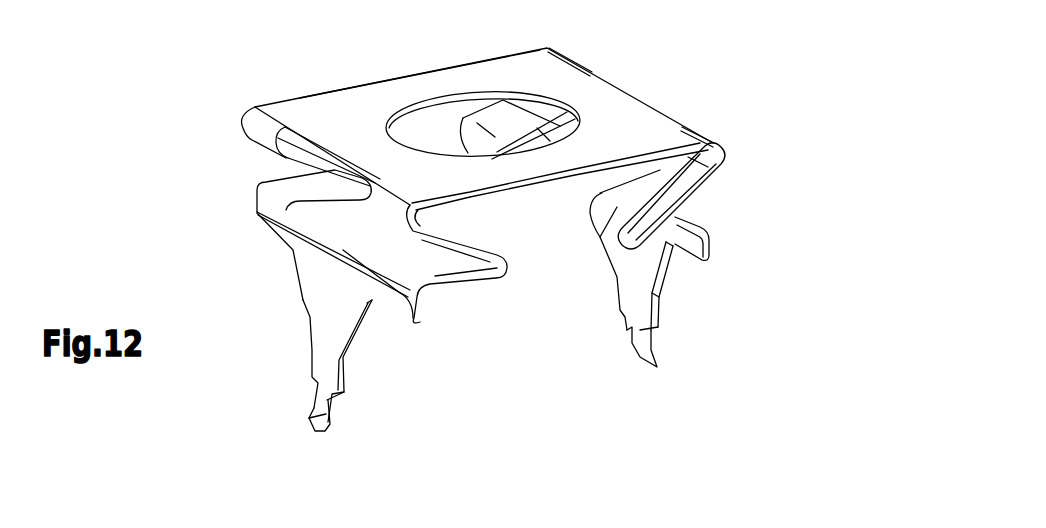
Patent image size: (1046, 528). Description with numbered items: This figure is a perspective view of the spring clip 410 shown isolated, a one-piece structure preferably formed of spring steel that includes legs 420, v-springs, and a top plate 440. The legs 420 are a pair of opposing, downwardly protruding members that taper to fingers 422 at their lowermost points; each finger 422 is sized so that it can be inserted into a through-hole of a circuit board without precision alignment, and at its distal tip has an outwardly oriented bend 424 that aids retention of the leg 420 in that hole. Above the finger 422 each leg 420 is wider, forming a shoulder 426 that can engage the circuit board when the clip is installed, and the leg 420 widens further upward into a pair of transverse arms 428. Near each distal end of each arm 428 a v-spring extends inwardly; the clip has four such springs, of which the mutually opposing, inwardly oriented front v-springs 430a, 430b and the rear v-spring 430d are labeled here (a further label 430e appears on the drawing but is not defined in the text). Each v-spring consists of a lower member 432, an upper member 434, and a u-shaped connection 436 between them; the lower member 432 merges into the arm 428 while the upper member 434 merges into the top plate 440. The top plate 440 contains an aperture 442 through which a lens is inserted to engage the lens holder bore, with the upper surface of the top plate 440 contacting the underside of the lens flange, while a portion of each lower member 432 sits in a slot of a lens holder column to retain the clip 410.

The spring clip 410 is at (836, 64).
The leg 420 is at (212, 425).
The finger 422 is at (333, 407).
The outwardly oriented bend 424 is at (327, 430).
The shoulder 426 is at (313, 381).
The arm 428 is at (263, 223).
The front v-spring 430a is at (473, 283).
The front v-spring 430b is at (776, 259).
The rear v-spring 430d is at (510, 53).
The end bend portion 430e is at (270, 182).
The lower member 432 is at (673, 252).
The upper member 434 is at (697, 185).
The u-shaped connection 436 is at (600, 225).
The top plate 440 is at (620, 125).
The aperture 442 is at (436, 130).